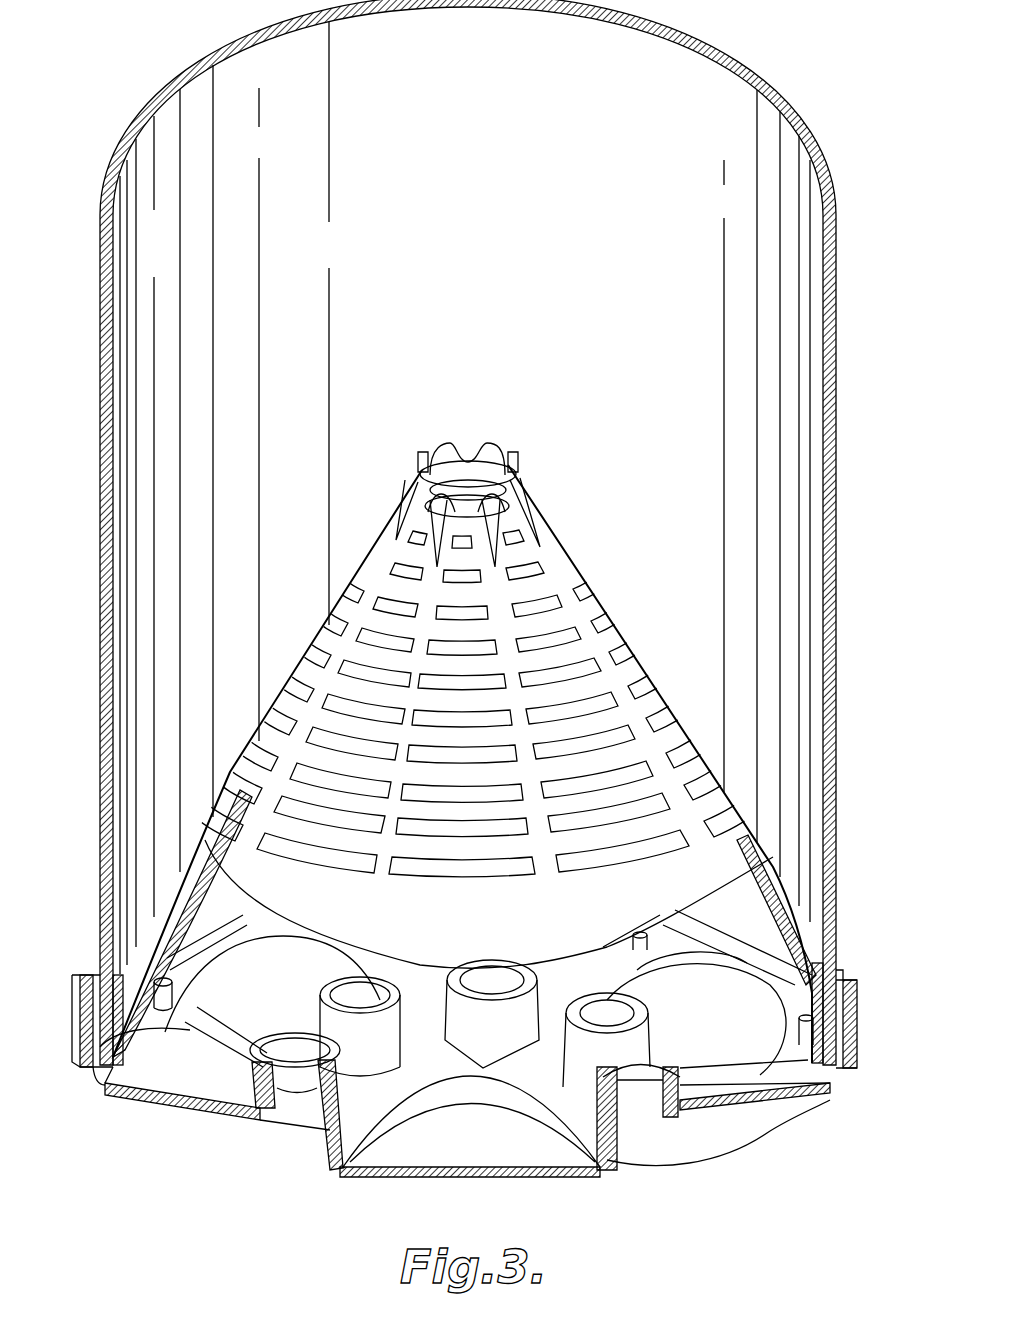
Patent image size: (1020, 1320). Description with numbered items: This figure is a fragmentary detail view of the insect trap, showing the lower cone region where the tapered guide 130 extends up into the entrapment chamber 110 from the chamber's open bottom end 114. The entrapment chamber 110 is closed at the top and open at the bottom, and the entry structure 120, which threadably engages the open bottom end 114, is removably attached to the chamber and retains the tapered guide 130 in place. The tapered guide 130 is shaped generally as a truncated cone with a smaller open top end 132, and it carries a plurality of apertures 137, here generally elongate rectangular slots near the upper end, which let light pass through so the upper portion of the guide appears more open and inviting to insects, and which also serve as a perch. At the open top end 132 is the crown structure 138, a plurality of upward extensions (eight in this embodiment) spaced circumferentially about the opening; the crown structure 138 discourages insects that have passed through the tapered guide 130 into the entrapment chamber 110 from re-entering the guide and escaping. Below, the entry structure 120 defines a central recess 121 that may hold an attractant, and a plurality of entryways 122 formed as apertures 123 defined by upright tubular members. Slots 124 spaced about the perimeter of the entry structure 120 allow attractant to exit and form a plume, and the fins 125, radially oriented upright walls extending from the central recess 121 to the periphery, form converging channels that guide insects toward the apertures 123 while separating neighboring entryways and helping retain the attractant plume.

The entrapment chamber 110 is at (836, 262).
The open bottom end 114 is at (848, 1035).
The entry structure 120 is at (507, 1064).
The central recess 121 is at (464, 1150).
The entryways 122 is at (342, 1117).
The apertures 123 is at (298, 1067).
The slots 124 is at (103, 1070).
The fins 125 is at (725, 1127).
The tapered guide 130 is at (471, 745).
The open top end 132 is at (457, 477).
The apertures 137 is at (565, 548).
The crown structure 138 is at (515, 458).